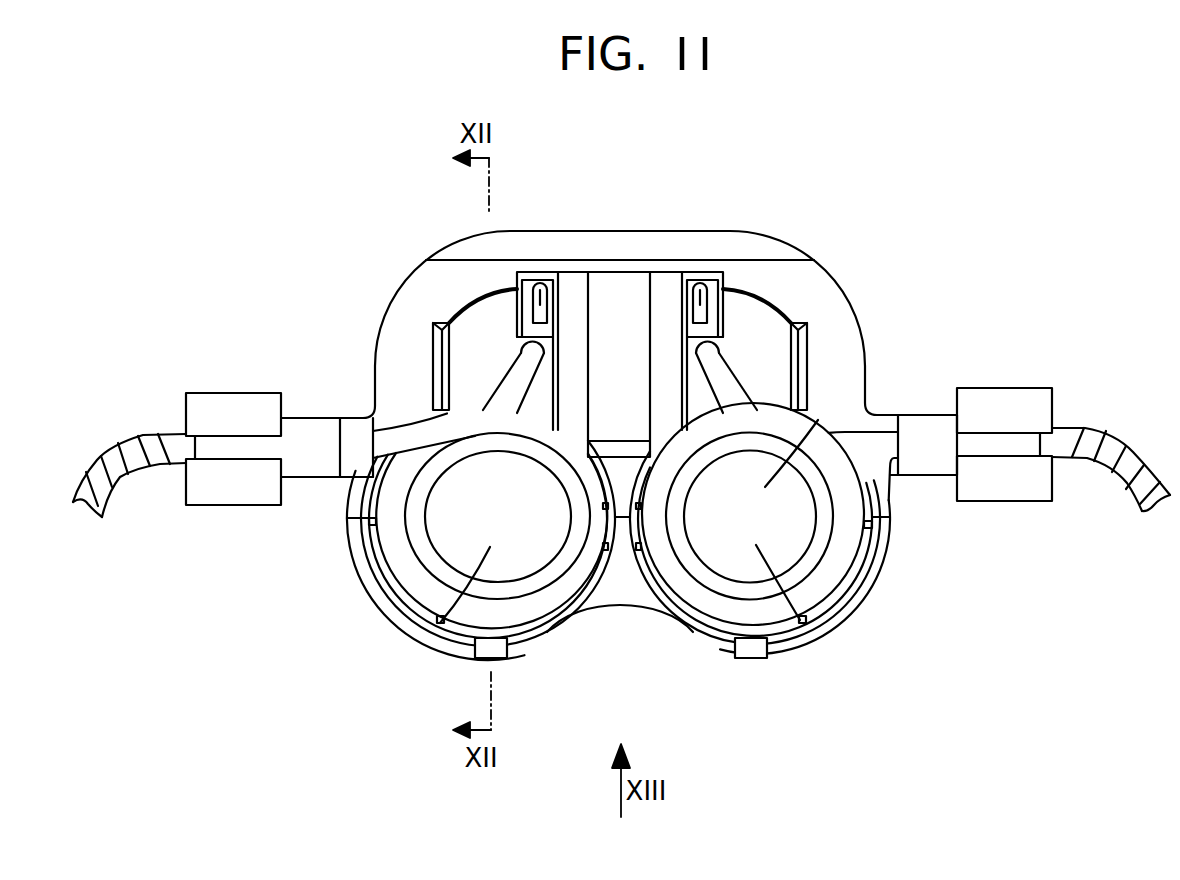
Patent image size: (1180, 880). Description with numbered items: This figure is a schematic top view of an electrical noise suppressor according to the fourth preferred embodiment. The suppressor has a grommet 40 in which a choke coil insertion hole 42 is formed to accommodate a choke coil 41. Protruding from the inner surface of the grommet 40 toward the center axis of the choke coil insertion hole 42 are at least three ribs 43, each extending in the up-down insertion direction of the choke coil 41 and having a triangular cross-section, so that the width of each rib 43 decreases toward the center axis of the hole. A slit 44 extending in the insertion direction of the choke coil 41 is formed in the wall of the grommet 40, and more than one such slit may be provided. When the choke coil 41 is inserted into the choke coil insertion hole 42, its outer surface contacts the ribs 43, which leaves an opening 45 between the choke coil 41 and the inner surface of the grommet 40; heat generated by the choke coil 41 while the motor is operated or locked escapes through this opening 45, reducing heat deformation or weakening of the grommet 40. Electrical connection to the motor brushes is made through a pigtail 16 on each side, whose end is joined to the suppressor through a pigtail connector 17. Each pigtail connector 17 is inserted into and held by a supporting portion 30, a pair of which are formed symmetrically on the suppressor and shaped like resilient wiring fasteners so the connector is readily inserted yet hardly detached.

The pigtail 16 is at (130, 437).
The pigtail connector 17 is at (318, 430).
The supporting portion 30 is at (238, 392).
The grommet 40 is at (822, 277).
The choke coil 41 is at (408, 573).
The choke coil insertion hole 42 is at (376, 550).
The rib 43 is at (607, 507).
The slit 44 is at (497, 656).
The opening 45 is at (674, 625).